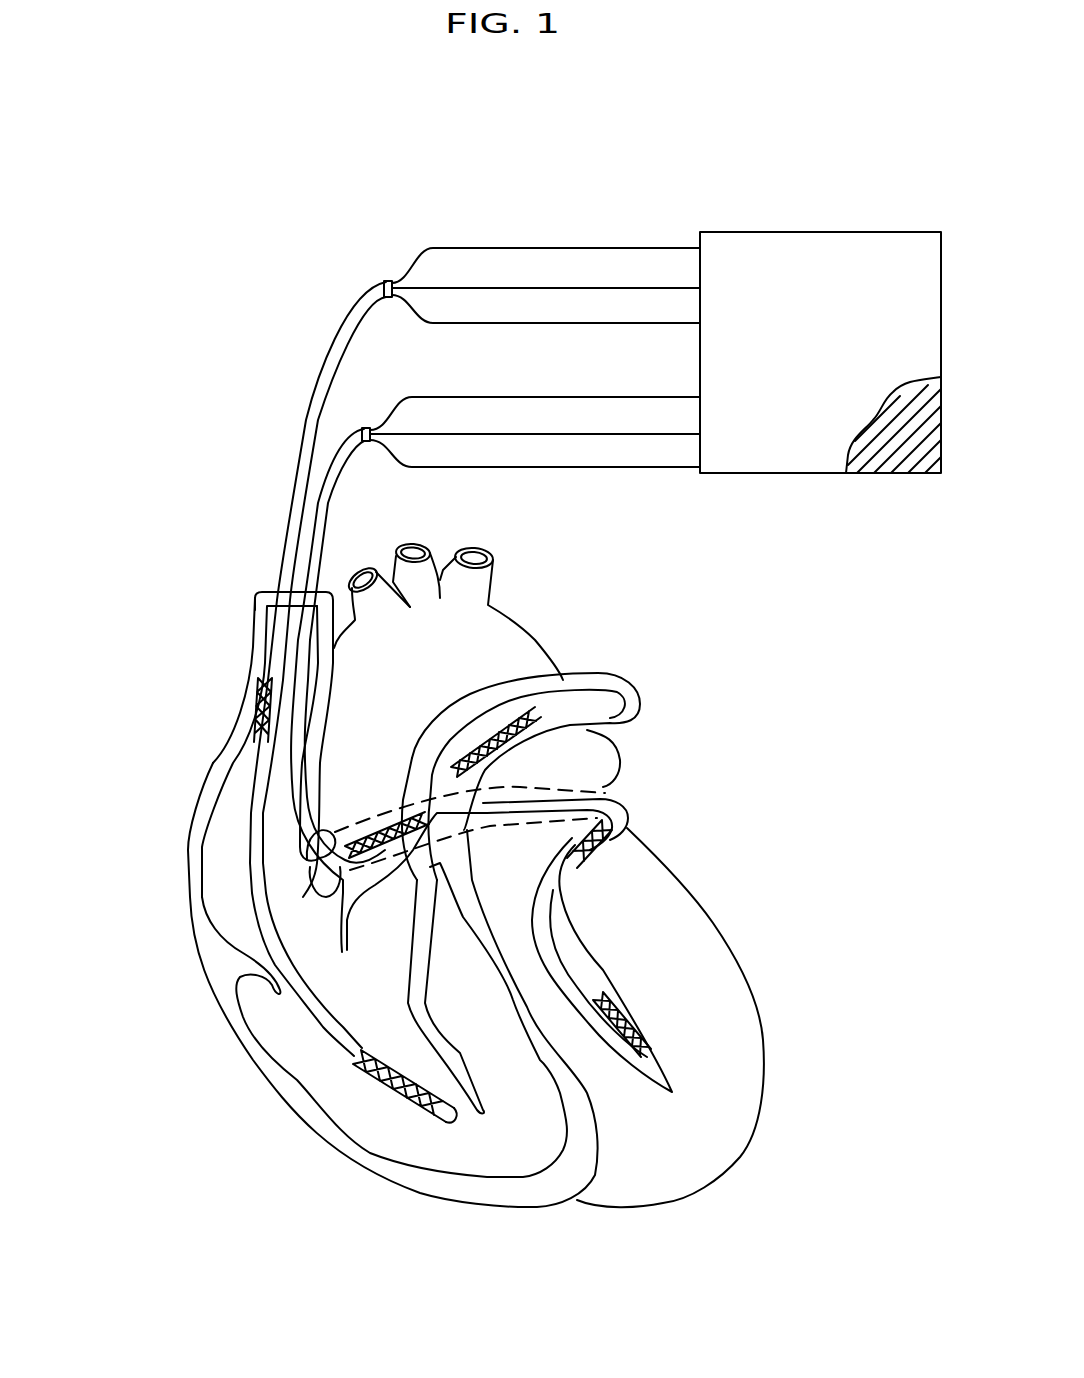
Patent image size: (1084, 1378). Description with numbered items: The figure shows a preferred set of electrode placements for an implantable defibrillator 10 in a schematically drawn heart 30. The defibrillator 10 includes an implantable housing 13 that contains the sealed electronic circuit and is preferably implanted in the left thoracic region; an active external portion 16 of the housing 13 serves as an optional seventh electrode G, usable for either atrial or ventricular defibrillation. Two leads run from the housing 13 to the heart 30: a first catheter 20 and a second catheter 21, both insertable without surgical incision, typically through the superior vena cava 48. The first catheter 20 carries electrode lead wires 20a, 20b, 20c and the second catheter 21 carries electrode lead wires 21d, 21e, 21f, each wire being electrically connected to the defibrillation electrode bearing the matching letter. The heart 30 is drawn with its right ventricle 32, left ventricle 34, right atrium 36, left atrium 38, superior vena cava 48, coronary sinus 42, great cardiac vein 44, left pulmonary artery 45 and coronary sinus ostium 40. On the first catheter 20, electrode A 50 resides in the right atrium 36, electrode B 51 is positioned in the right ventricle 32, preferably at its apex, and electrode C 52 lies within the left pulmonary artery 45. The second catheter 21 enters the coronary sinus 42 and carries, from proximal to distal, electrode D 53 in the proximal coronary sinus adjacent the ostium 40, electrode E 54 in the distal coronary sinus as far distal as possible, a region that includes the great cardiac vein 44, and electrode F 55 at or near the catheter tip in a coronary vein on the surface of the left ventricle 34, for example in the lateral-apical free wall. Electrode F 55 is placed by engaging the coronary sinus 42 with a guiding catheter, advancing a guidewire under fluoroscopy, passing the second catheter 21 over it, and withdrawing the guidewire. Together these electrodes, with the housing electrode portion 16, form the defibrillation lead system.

The defibrillator 10 is at (751, 214).
The implantable housing 13 is at (860, 232).
The active external portion of the housing 16 is at (889, 464).
The first catheter 20 is at (304, 415).
The electrode lead wire 20a is at (475, 248).
The electrode lead wire 20b is at (537, 288).
The electrode lead wire 20c is at (624, 323).
The second catheter 21 is at (343, 450).
The electrode lead wire 21d is at (488, 397).
The electrode lead wire 21e is at (570, 434).
The electrode lead wire 21f is at (625, 434).
The heart 30 is at (787, 768).
The right ventricle 32 is at (515, 1127).
The left ventricle 34 is at (697, 1160).
The right atrium 36 is at (230, 870).
The left atrium 38 is at (492, 668).
The coronary sinus ostium 40 is at (320, 880).
The coronary sinus 42 is at (607, 795).
The great cardiac vein 44 is at (582, 948).
The left pulmonary artery 45 is at (637, 687).
The superior vena cava 48 is at (222, 756).
The electrode A 50 is at (270, 700).
The electrode B 51 is at (403, 1098).
The electrode C 52 is at (527, 710).
The electrode D 53 is at (385, 830).
The electrode E 54 is at (617, 823).
The electrode F 55 is at (640, 1033).